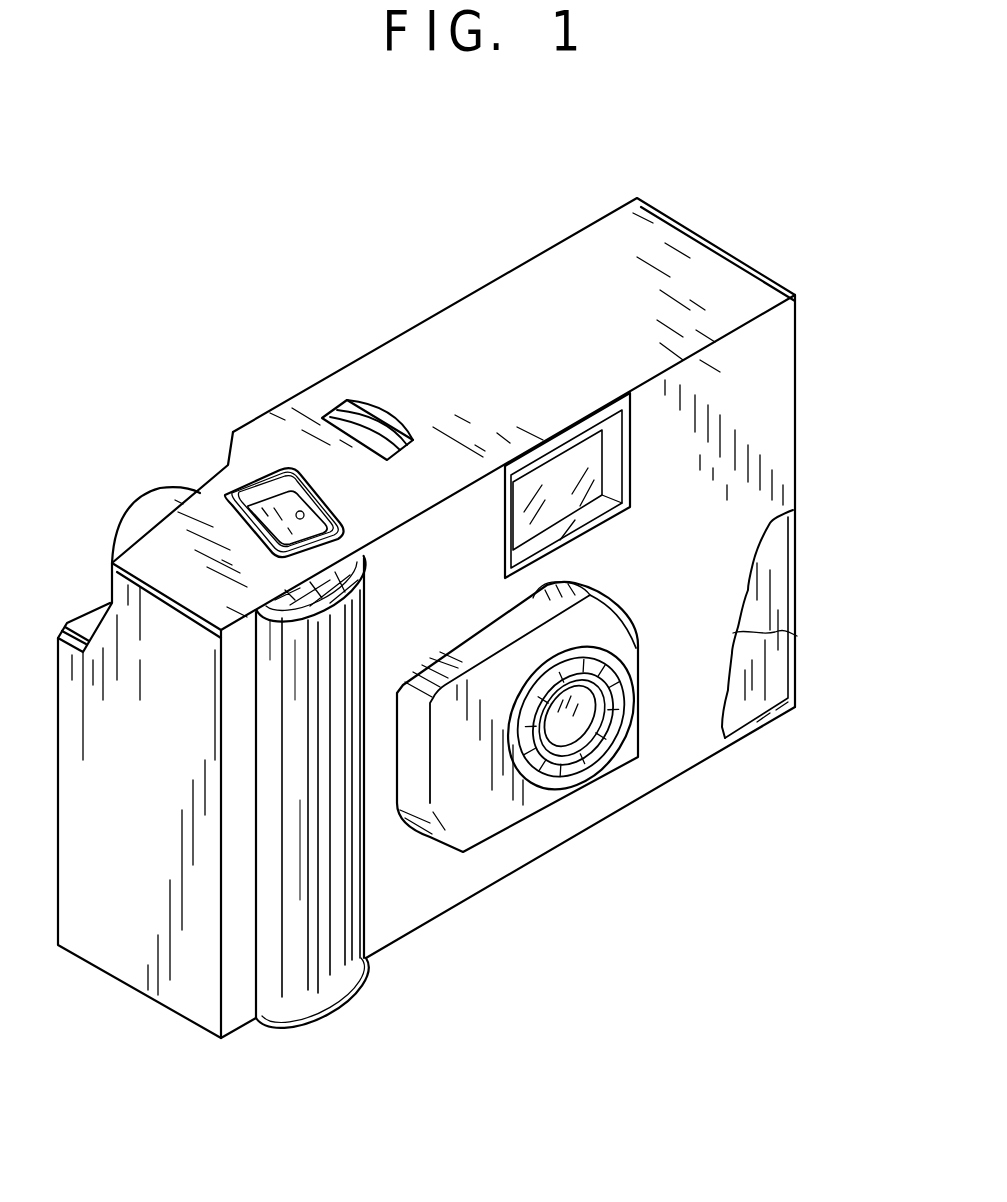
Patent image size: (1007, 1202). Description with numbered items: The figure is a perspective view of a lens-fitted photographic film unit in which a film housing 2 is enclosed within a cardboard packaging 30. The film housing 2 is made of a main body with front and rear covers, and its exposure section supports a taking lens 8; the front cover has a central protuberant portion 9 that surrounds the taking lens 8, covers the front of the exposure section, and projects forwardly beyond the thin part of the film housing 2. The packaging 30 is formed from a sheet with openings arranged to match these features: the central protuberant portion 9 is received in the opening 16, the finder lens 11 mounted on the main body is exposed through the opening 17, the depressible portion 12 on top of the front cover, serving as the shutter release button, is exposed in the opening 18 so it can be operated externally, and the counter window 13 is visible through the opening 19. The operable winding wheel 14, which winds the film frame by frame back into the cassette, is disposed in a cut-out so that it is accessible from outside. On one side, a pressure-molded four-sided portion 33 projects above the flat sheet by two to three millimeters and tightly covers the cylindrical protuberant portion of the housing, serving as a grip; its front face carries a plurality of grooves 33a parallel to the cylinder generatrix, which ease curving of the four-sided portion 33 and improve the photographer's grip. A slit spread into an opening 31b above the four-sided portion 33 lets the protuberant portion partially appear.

The film housing 2 is at (753, 697).
The taking lens 8 is at (577, 735).
The central protuberant portion 9 is at (497, 827).
The finder lens 11 is at (557, 470).
The depressible portion 12 is at (313, 515).
The counter window 13 is at (367, 433).
The operable winding wheel 14 is at (147, 508).
The opening 16 is at (578, 588).
The opening 17 is at (600, 497).
The opening 18 is at (273, 470).
The opening 19 is at (400, 420).
The cardboard packaging 30 is at (797, 636).
The opening 31b is at (362, 572).
The four-sided portion 33 is at (347, 983).
The grooves 33a is at (303, 967).